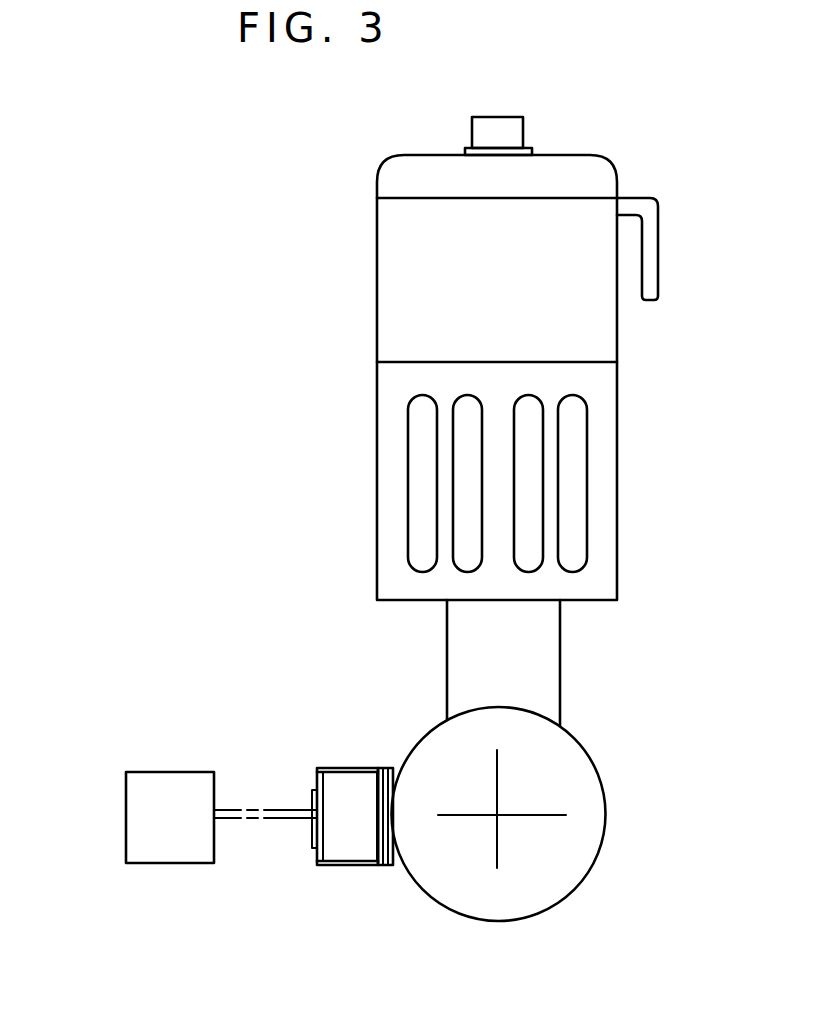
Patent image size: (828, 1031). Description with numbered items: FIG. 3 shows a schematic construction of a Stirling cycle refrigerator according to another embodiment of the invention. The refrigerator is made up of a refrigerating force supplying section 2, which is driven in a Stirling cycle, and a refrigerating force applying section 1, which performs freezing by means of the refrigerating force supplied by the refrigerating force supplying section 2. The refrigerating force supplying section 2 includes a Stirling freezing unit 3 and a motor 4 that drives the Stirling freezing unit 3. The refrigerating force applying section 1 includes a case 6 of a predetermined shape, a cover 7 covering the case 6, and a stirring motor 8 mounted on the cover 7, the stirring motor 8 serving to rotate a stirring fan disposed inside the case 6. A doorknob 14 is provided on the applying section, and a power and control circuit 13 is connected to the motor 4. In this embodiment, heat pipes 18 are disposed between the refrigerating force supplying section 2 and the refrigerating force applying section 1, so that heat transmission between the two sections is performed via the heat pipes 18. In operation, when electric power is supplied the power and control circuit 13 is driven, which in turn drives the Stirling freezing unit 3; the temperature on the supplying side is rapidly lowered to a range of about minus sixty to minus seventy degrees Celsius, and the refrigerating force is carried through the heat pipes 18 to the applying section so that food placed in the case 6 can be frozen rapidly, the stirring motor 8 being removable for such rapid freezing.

The refrigerating force applying section 1 is at (365, 292).
The refrigerating force supplying section 2 is at (539, 790).
The Stirling freezing unit 3 is at (513, 903).
The motor 4 is at (360, 852).
The case 6 is at (609, 328).
The cover 7 is at (396, 170).
The stirring motor 8 is at (514, 125).
The power and control circuit 13 is at (132, 826).
The doorknob 14 is at (651, 258).
The heat pipes 18 is at (609, 480).